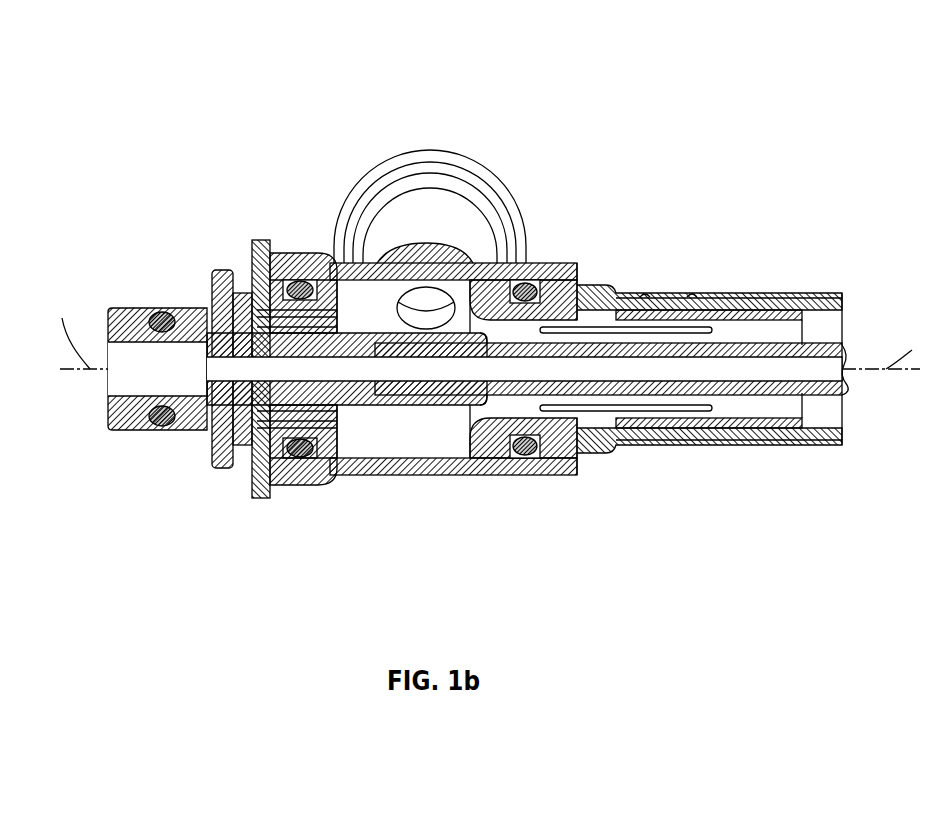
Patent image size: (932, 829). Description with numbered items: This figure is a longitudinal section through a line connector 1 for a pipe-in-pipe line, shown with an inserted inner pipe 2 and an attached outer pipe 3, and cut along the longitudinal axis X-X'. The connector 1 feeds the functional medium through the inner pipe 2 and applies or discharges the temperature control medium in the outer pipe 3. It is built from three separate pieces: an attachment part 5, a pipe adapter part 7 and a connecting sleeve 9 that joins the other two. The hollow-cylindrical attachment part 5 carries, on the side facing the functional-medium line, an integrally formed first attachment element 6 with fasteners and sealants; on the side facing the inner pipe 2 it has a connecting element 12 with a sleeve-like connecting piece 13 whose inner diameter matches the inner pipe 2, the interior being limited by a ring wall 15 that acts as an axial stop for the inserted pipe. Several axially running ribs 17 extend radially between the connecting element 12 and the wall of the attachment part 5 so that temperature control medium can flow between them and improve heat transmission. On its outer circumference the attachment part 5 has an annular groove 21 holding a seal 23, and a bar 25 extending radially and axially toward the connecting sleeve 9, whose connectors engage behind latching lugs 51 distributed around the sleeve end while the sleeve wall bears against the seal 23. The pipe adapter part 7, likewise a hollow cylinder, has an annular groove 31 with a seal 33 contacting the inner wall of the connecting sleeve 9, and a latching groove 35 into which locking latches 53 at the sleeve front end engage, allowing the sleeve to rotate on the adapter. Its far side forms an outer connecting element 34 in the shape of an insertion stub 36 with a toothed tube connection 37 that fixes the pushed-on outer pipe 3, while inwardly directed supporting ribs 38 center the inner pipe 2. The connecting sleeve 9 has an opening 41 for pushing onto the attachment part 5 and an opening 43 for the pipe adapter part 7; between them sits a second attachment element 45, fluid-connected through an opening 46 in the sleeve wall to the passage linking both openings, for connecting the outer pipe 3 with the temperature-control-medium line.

The line connector 1 is at (166, 118).
The inner pipe 2 is at (777, 441).
The outer pipe 3 is at (822, 295).
The attachment part 5 is at (210, 302).
The first attachment element 6 is at (203, 442).
The pipe adapter part 7 is at (551, 477).
The connecting sleeve 9 is at (530, 263).
The connecting element 12 is at (436, 434).
The connecting piece 13 is at (470, 408).
The ring wall 15 is at (387, 407).
The ribs 17 is at (243, 280).
The annular groove 21 is at (255, 282).
The seal 23 is at (302, 462).
The bar 25 is at (256, 470).
The annular groove 31 is at (548, 268).
The seal 33 is at (540, 264).
The outer connecting element 34 is at (722, 452).
The latching groove 35 is at (607, 295).
The insertion stub 36 is at (800, 448).
The toothed tube connection 37 is at (645, 297).
The supporting ribs 38 is at (650, 411).
The opening 41 is at (324, 231).
The opening 43 is at (580, 481).
The second attachment element 45 is at (417, 140).
The opening 46 is at (436, 302).
The latching lugs 51 is at (300, 278).
The locking latches 53 is at (613, 458).